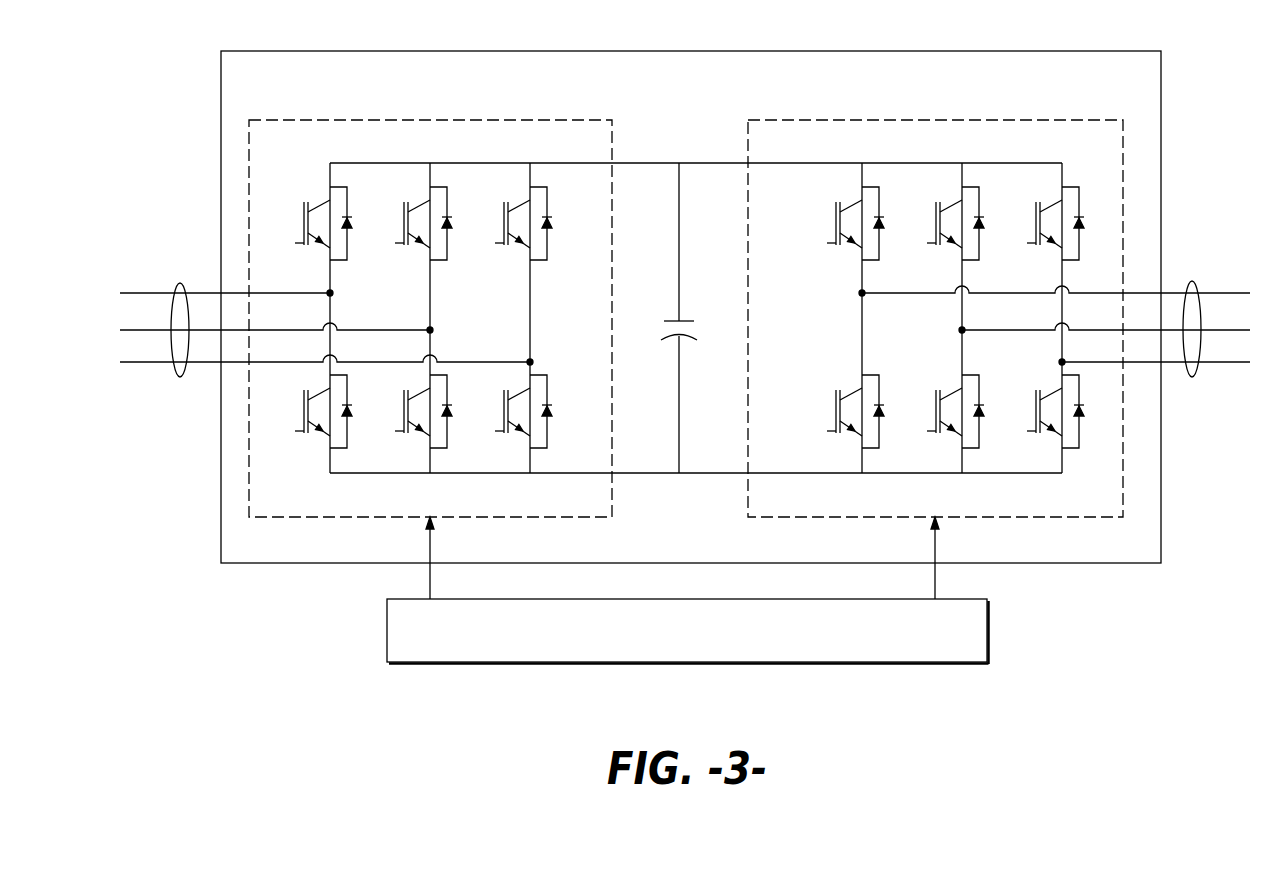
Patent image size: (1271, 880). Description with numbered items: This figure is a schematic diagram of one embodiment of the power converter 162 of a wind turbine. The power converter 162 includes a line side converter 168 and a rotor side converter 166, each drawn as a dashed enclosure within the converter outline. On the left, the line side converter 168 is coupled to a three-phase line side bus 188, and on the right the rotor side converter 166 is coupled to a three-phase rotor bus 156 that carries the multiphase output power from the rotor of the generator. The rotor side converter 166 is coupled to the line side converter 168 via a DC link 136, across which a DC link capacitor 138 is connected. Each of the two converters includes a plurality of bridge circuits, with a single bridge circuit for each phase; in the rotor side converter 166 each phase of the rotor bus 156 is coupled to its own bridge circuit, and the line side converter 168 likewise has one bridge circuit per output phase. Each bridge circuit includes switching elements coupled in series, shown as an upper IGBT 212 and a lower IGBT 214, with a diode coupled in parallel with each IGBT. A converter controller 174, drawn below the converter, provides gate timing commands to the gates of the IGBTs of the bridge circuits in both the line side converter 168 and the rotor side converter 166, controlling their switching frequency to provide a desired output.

The power converter 162 is at (772, 51).
The line side converter 168 is at (432, 120).
The rotor side converter 166 is at (935, 298).
The DC link 136 is at (643, 163).
The DC link capacitor 138 is at (683, 318).
The line side bus 188 is at (178, 283).
The rotor bus 156 is at (1192, 281).
The upper IGBT 212 is at (835, 222).
The lower IGBT 214 is at (835, 417).
The converter controller 174 is at (988, 638).